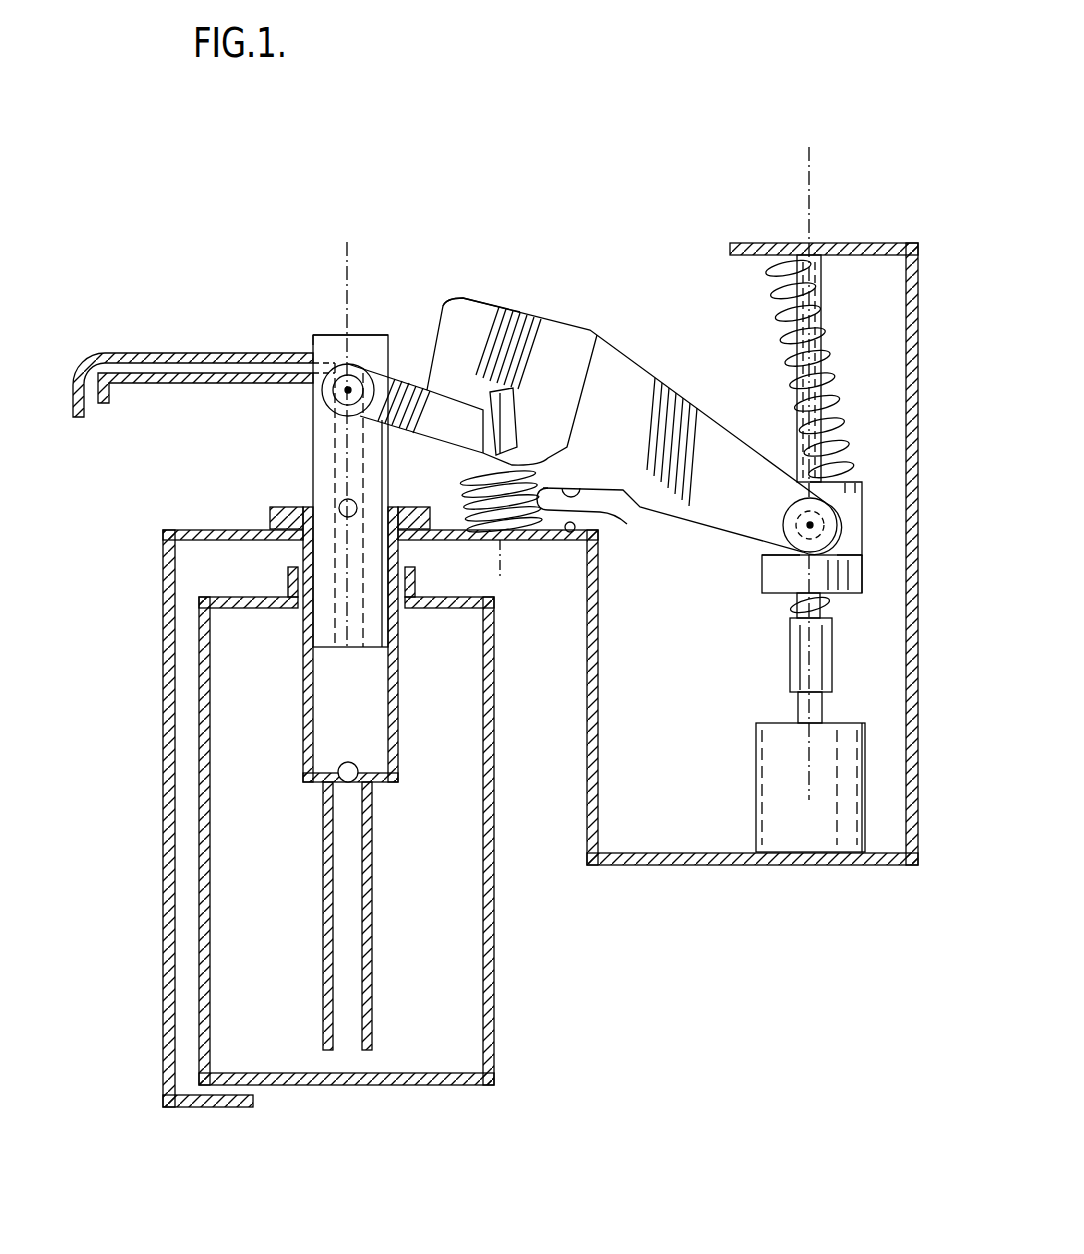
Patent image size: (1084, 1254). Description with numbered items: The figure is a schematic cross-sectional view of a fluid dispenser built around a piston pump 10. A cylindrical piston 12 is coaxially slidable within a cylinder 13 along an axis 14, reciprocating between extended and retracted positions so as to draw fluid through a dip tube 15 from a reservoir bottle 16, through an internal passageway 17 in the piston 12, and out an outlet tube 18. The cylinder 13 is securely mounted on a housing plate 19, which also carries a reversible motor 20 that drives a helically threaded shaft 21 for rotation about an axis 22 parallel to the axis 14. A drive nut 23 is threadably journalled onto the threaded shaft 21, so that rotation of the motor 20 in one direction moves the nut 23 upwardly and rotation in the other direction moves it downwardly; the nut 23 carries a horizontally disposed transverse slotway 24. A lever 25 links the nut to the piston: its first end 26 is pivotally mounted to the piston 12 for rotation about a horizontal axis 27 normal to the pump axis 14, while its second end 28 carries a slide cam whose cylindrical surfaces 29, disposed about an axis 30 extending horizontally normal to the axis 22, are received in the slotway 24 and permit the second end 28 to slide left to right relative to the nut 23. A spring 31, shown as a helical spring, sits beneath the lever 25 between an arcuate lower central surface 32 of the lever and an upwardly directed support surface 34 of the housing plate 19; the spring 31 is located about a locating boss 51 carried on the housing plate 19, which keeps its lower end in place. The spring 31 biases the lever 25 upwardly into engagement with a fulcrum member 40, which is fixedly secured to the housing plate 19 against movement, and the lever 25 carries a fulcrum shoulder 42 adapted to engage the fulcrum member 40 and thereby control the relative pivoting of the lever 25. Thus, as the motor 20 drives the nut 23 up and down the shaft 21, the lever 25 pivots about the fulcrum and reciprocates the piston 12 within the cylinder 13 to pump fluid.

The piston pump 10 is at (294, 324).
The cylindrical piston 12 is at (312, 443).
The cylinder 13 is at (304, 698).
The axis 14 is at (347, 244).
The dip tube 15 is at (322, 920).
The reservoir bottle 16 is at (494, 981).
The internal passageway 17 is at (346, 467).
The outlet tube 18 is at (109, 404).
The housing plate 19 is at (158, 573).
The reversible motor 20 is at (775, 762).
The helically threaded shaft 21 is at (795, 300).
The axis 22 is at (809, 165).
The drive nut 23 is at (775, 590).
The transverse slotway 24 is at (853, 512).
The lever 25 is at (556, 310).
The first end 26 is at (379, 344).
The horizontal axis 27 is at (343, 390).
The second end 28 is at (759, 552).
The cylindrical surfaces 29 is at (862, 556).
The axis 30 is at (808, 522).
The spring 31 is at (627, 524).
The arcuate lower central surface 32 is at (582, 488).
The support surface 34 is at (571, 533).
The fulcrum member 40 is at (505, 396).
The fulcrum shoulder 42 is at (464, 381).
The locating boss 51 is at (470, 496).